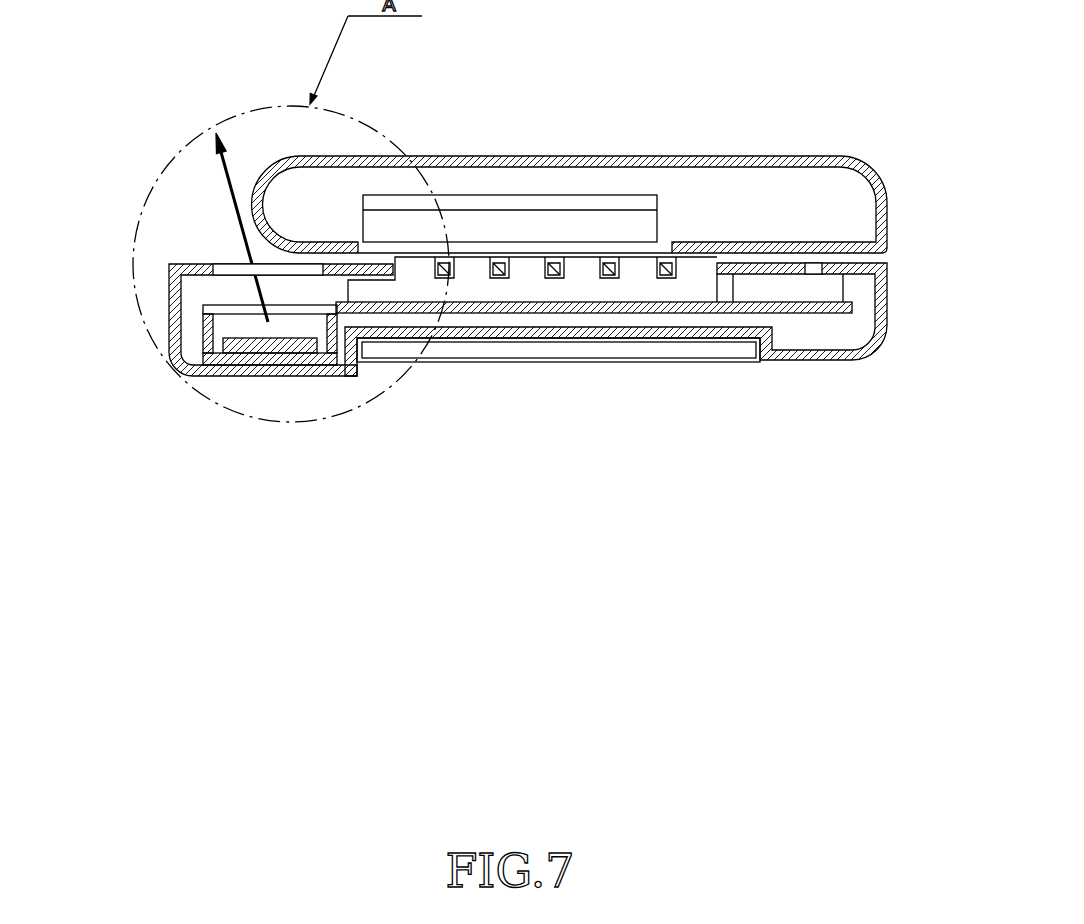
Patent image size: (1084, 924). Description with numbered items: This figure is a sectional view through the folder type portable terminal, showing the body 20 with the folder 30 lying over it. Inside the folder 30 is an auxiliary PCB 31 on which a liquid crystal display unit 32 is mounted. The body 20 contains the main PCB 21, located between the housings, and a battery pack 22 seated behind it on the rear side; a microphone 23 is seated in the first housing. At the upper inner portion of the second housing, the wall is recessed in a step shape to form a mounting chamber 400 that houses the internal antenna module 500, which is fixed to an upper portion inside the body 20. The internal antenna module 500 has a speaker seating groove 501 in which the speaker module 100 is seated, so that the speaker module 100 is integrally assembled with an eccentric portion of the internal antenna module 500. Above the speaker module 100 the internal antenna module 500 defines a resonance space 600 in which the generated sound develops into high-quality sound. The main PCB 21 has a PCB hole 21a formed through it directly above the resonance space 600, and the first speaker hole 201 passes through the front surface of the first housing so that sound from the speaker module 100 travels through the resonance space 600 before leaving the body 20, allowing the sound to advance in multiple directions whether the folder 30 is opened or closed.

The body 20 is at (558, 331).
The main PCB 21 is at (853, 307).
The PCB hole 21a is at (258, 323).
The battery pack 22 is at (618, 352).
The microphone 23 is at (830, 290).
The folder 30 is at (450, 151).
The auxiliary PCB 31 is at (621, 203).
The liquid crystal display unit 32 is at (540, 218).
The speaker module 100 is at (201, 384).
The first speaker hole 201 is at (226, 266).
The mounting chamber 400 is at (343, 352).
The internal antenna module 500 is at (193, 348).
The speaker seating groove 501 is at (206, 362).
The resonance space 600 is at (230, 305).